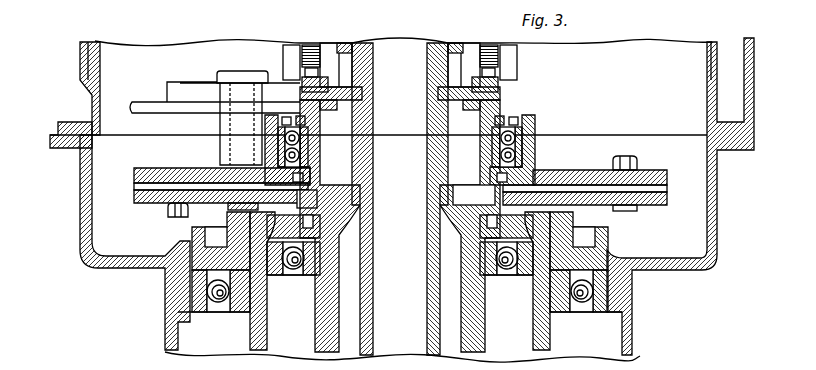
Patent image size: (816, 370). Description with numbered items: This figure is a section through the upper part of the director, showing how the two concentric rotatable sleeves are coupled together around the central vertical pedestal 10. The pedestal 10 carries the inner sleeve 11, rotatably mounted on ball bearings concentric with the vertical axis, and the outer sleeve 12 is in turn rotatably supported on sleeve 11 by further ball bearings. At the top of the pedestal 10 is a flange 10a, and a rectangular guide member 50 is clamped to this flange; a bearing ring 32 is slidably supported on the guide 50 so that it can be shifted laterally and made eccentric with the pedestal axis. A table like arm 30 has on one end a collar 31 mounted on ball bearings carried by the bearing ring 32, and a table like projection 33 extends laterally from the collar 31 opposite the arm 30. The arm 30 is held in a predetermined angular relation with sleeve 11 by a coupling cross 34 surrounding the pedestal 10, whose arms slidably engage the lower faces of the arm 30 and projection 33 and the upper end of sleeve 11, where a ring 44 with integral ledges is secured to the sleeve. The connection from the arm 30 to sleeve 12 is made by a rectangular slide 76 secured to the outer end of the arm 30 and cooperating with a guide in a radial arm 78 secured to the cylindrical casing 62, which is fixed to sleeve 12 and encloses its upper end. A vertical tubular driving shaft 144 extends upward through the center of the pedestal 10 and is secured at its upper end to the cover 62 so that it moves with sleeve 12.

The cylindrical cover or casing 62 is at (80, 103).
The radial arm 78 is at (147, 105).
The rectangular slide 76 is at (222, 72).
The table like arm 30 is at (180, 170).
The flange 10a is at (346, 110).
The vertical tubular driving shaft 144 is at (428, 125).
The vertical pedestal or supporting member 10 is at (446, 164).
The rectangular guide member 50 is at (464, 100).
The bearing ring 32 is at (502, 101).
The collar 31 is at (536, 130).
The table like projection 33 is at (651, 170).
The coupling cross 34 is at (662, 208).
The ring 44 is at (607, 240).
The sleeve 11 is at (537, 307).
The sleeve 12 is at (634, 330).